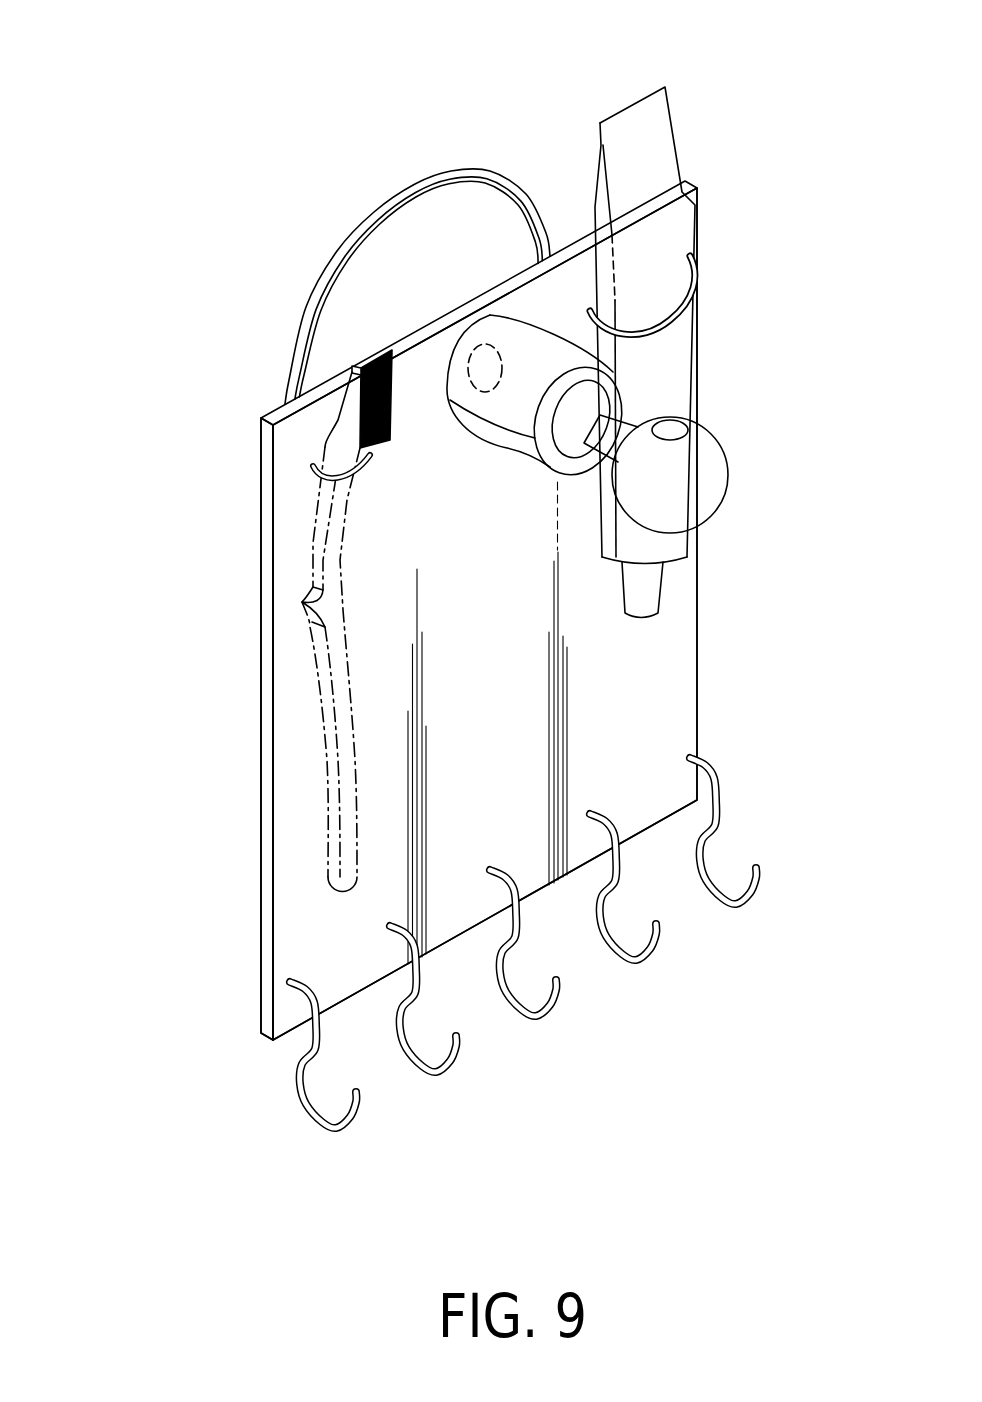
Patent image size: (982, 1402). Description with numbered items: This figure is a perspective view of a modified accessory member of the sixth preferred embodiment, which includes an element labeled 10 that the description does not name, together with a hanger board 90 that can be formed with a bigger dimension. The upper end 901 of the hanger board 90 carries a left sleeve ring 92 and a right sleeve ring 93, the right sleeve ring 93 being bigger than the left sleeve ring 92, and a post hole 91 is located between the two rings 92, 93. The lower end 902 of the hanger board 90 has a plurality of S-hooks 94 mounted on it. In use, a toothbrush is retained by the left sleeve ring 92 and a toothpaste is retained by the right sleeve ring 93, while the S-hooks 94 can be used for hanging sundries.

The hanging ring 10 is at (380, 178).
The hanger board 90 is at (232, 613).
The upper end 901 is at (285, 453).
The lower end 902 is at (292, 960).
The post hole 91 is at (491, 343).
The left sleeve ring 92 is at (300, 498).
The right sleeve ring 93 is at (708, 297).
The S-hooks 94 is at (327, 1128).